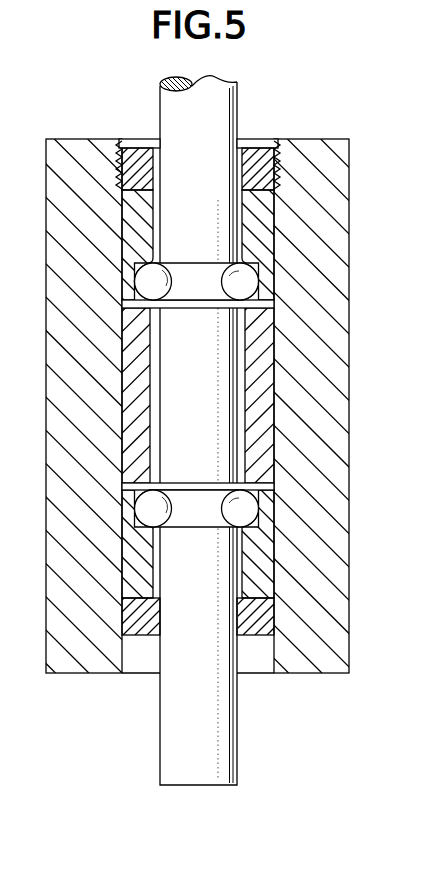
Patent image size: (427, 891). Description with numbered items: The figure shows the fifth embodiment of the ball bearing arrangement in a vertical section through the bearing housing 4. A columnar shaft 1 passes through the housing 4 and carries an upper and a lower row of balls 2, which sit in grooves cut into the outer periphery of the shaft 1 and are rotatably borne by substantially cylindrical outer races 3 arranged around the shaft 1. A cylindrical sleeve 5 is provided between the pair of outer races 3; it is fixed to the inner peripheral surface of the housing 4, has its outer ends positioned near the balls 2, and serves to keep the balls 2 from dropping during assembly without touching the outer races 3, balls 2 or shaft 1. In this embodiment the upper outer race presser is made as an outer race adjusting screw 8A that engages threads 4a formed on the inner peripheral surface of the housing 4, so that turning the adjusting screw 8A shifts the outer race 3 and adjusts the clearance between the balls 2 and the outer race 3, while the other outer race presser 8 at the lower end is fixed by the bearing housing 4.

The shaft 1 is at (237, 727).
The balls 2 is at (163, 278).
The outer race 3 is at (270, 222).
The bearing housing 4 is at (48, 347).
The threads 4a is at (120, 157).
The sleeve 5 is at (263, 387).
The outer race presser 8 is at (259, 635).
The outer race adjusting screw 8A is at (200, 151).